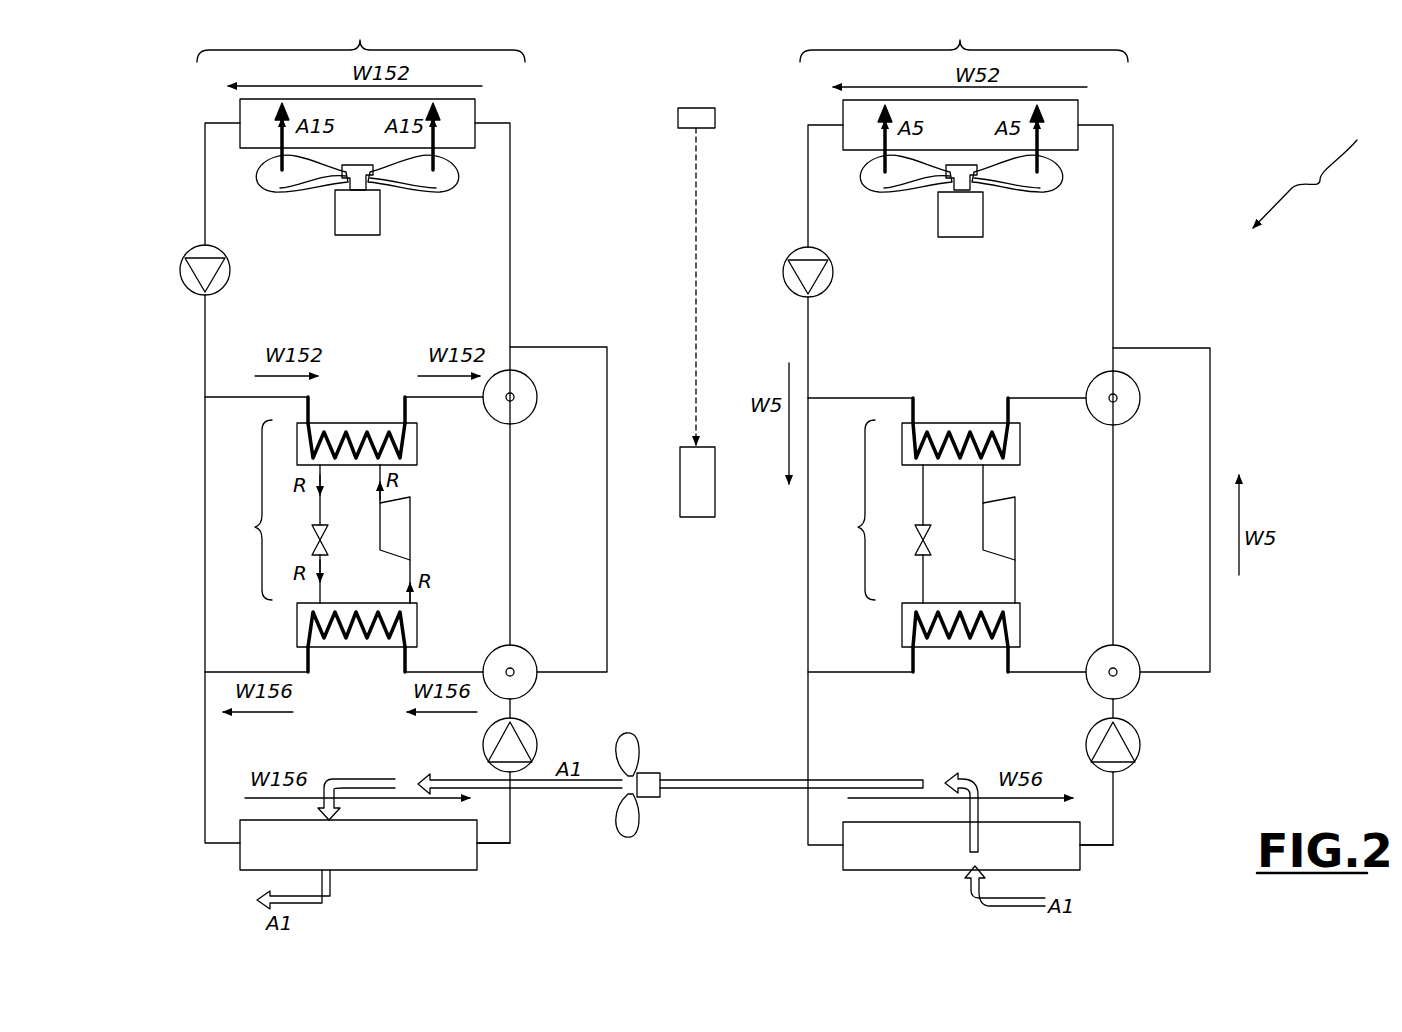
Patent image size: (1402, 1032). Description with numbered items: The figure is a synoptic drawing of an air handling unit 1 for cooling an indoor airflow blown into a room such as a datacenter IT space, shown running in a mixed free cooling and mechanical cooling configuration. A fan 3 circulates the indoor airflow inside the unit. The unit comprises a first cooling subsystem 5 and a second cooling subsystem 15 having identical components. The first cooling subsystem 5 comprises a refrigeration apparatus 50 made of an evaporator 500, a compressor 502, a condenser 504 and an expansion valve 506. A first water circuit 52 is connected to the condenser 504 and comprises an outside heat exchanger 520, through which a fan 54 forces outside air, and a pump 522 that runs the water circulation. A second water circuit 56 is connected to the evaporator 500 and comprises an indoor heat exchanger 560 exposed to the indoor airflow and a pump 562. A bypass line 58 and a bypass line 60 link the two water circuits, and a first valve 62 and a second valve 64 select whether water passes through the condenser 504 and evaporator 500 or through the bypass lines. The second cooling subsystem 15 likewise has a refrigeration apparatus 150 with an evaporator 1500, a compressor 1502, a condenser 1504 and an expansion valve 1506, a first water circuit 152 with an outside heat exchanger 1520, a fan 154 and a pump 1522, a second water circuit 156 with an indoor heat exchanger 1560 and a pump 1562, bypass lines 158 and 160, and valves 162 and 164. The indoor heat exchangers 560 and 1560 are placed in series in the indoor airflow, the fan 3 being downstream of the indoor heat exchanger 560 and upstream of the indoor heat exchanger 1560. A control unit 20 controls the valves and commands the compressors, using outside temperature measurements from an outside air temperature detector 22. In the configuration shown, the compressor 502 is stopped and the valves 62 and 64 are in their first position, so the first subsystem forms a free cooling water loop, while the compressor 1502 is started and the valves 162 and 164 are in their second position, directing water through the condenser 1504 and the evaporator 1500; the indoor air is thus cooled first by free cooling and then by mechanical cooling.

The air handling unit 1 is at (1312, 170).
The fan 3 is at (640, 735).
The first cooling subsystem 5 is at (964, 39).
The second cooling subsystem 15 is at (361, 39).
The control unit 20 is at (697, 482).
The outside air temperature detector 22 is at (682, 104).
The refrigeration apparatus 50 is at (850, 510).
The first water circuit 52 is at (1113, 262).
The fan 54 is at (975, 237).
The second water circuit 56 is at (1113, 808).
The bypass line 58 is at (808, 600).
The bypass line 60 is at (1210, 428).
The first valve 62 is at (1128, 420).
The second valve 64 is at (1135, 655).
The refrigeration apparatus 150 is at (247, 510).
The first water circuit 152 is at (510, 277).
The fan 154 is at (372, 235).
The second water circuit 156 is at (510, 825).
The bypass line 158 is at (205, 640).
The bypass line 160 is at (607, 385).
The first valve 162 is at (525, 420).
The second valve 164 is at (530, 652).
The evaporator 500 is at (1020, 623).
The compressor 502 is at (1015, 530).
The condenser 504 is at (1020, 445).
The expansion valve 506 is at (931, 545).
The outside heat exchanger 520 is at (1078, 117).
The pump 522 is at (828, 288).
The indoor heat exchanger 560 is at (905, 870).
The pump 562 is at (1140, 745).
The evaporator 1500 is at (417, 623).
The compressor 1502 is at (410, 530).
The condenser 1504 is at (417, 445).
The expansion valve 1506 is at (328, 545).
The outside heat exchanger 1520 is at (475, 115).
The pump 1522 is at (183, 284).
The indoor heat exchanger 1560 is at (430, 870).
The pump 1562 is at (537, 740).